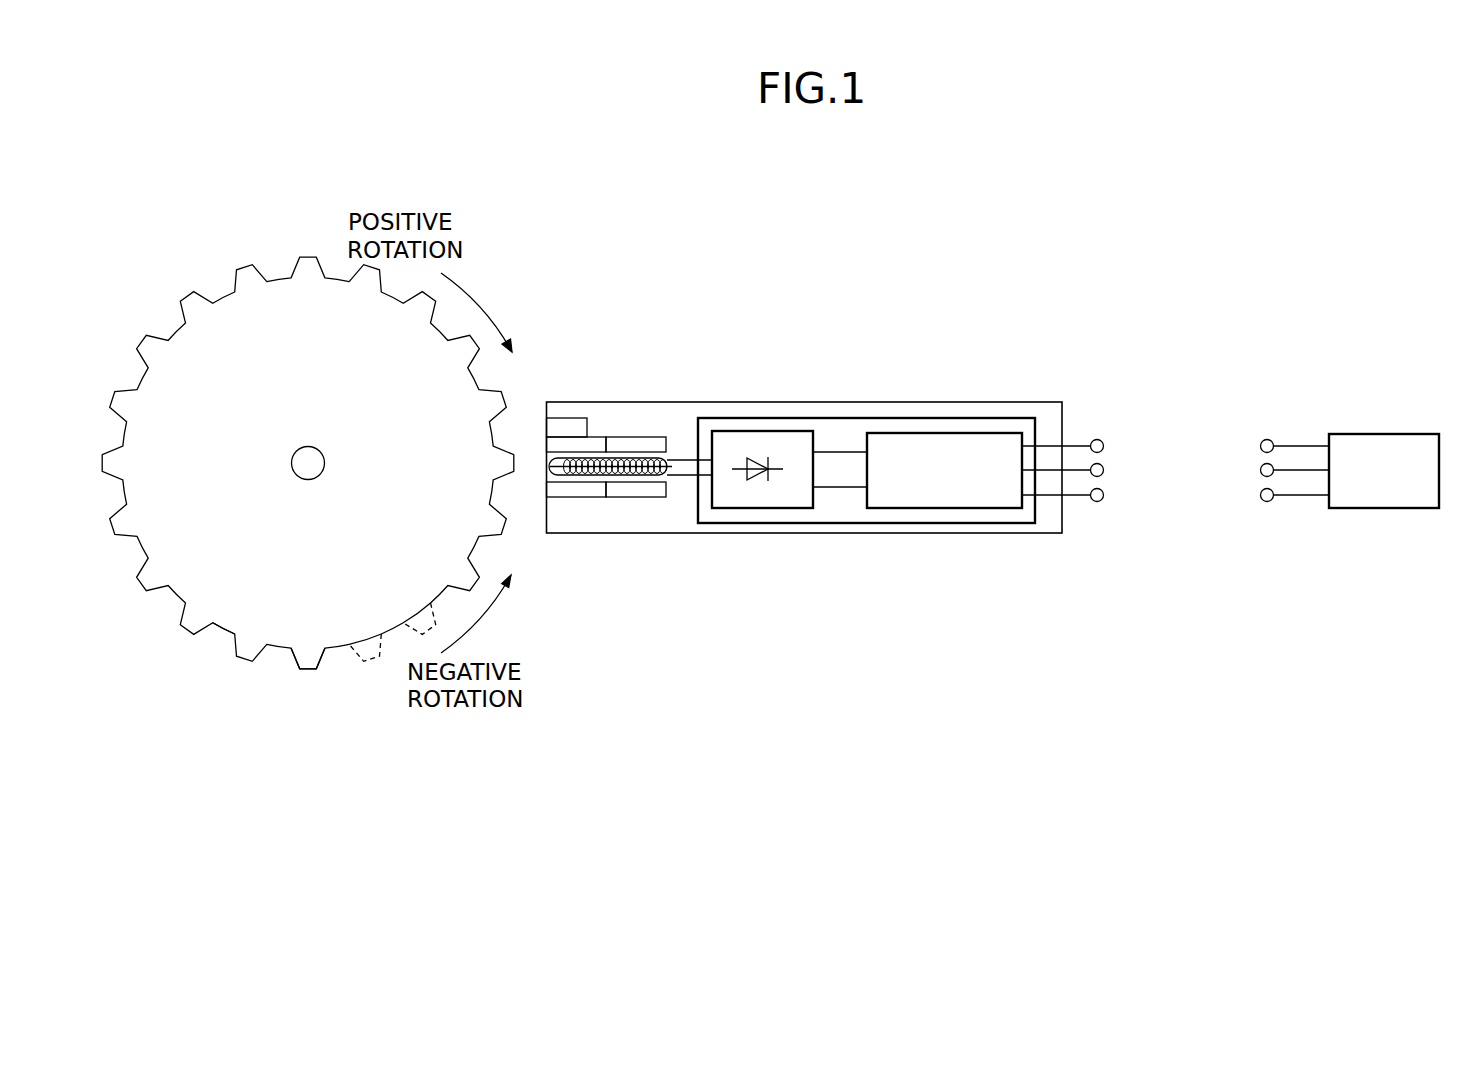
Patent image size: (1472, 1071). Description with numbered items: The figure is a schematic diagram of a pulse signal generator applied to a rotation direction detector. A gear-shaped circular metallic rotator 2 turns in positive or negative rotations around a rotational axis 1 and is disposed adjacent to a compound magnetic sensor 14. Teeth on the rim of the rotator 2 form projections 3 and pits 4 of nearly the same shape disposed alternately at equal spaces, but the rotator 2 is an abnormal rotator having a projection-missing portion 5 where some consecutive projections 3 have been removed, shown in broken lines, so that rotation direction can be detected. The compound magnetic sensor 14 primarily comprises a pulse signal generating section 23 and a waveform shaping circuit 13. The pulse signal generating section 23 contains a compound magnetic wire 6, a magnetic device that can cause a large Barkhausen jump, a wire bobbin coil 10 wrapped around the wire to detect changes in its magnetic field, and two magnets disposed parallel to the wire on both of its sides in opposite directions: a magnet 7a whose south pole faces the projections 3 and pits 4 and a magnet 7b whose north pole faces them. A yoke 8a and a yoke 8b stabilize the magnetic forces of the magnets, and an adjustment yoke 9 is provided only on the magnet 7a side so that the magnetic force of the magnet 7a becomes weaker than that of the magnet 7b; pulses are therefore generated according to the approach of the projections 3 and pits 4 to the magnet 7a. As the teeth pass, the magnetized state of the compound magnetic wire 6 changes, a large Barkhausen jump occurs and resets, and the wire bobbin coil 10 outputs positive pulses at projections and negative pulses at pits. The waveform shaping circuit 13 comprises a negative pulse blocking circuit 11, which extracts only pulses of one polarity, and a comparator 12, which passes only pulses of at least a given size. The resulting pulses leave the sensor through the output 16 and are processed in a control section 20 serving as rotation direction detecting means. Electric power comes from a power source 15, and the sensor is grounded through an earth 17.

The rotational axis 1 is at (307, 463).
The rotator 2 is at (283, 328).
The projection 3 is at (307, 670).
The pit 4 is at (224, 630).
The projection-missing portion 5 is at (370, 660).
The compound magnetic wire 6 is at (566, 470).
The magnet 7a is at (574, 444).
The magnet 7b is at (577, 490).
The yoke 8a is at (644, 444).
The yoke 8b is at (641, 492).
The adjustment yoke 9 is at (561, 425).
The wire bobbin coil 10 is at (682, 478).
The negative pulse blocking circuit 11 is at (763, 443).
The comparator 12 is at (973, 447).
The waveform shaping circuit 13 is at (971, 460).
The compound magnetic sensor 14 is at (1043, 528).
The power source 15 is at (1102, 442).
The output 16 is at (1104, 468).
The earth 17 is at (1101, 499).
The control section 20 is at (1363, 445).
The pulse signal generating section 23 is at (540, 492).